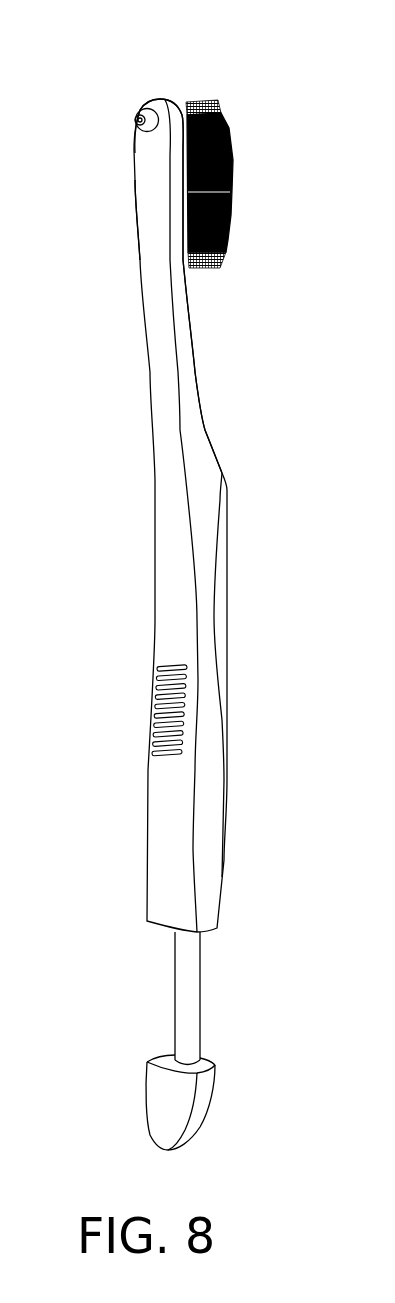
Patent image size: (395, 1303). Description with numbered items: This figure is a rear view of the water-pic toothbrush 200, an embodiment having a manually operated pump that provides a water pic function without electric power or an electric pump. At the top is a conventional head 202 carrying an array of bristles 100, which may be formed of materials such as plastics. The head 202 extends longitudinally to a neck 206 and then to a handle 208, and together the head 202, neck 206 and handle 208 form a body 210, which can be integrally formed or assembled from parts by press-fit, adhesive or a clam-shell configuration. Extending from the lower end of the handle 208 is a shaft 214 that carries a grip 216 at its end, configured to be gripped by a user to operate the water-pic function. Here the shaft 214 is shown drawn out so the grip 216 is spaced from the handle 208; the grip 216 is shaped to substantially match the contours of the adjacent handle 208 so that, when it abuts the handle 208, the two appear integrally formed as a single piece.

The brush head with bristles 100 is at (233, 172).
The water-pic toothbrush 200 is at (91, 56).
The head 202 is at (133, 181).
The neck 206 is at (195, 373).
The handle 208 is at (218, 617).
The body 210 is at (102, 557).
The shaft 214 is at (200, 995).
The grip 216 is at (210, 1092).